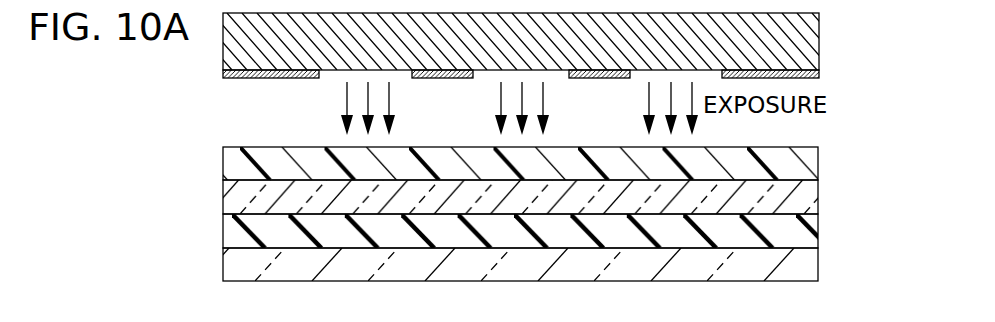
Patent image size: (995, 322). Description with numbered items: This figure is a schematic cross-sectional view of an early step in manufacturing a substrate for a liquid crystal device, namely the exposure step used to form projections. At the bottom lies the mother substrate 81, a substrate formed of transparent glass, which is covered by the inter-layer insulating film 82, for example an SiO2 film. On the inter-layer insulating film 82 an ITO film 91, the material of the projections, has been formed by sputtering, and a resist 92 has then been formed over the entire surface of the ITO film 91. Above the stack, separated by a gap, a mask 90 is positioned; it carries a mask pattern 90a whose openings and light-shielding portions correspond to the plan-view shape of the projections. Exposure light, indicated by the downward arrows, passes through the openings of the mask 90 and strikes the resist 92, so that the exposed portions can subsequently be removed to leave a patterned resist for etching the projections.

The mask 90 is at (815, 35).
The mask pattern 90a is at (820, 74).
The resist 92 is at (815, 163).
The ITO film 91 is at (815, 206).
The inter-layer insulating film 82 is at (805, 232).
The mother substrate 81 is at (815, 265).